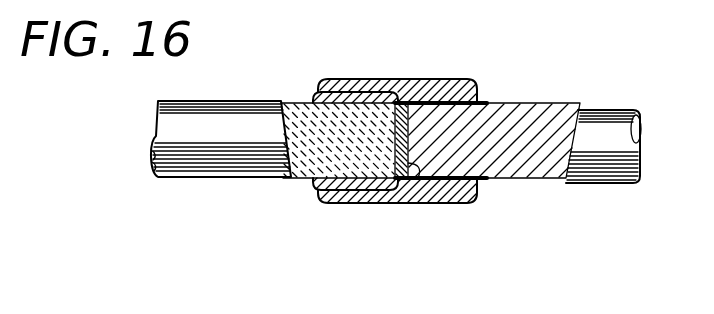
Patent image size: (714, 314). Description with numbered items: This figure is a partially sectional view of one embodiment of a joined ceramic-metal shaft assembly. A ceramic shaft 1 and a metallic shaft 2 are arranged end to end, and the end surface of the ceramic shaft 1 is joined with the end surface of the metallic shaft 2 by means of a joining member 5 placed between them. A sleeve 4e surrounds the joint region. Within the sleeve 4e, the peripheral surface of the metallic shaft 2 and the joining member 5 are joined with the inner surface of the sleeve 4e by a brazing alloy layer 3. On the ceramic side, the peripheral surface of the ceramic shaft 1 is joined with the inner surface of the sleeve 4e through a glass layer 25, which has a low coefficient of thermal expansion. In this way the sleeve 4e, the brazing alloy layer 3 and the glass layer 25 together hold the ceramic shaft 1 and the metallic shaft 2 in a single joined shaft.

The ceramic shaft 1 is at (298, 180).
The metallic shaft 2 is at (545, 158).
The brazing alloy layer 3 is at (483, 192).
The glass layer 25 is at (343, 206).
The joining member 5 is at (413, 206).
The sleeve 4e is at (392, 206).